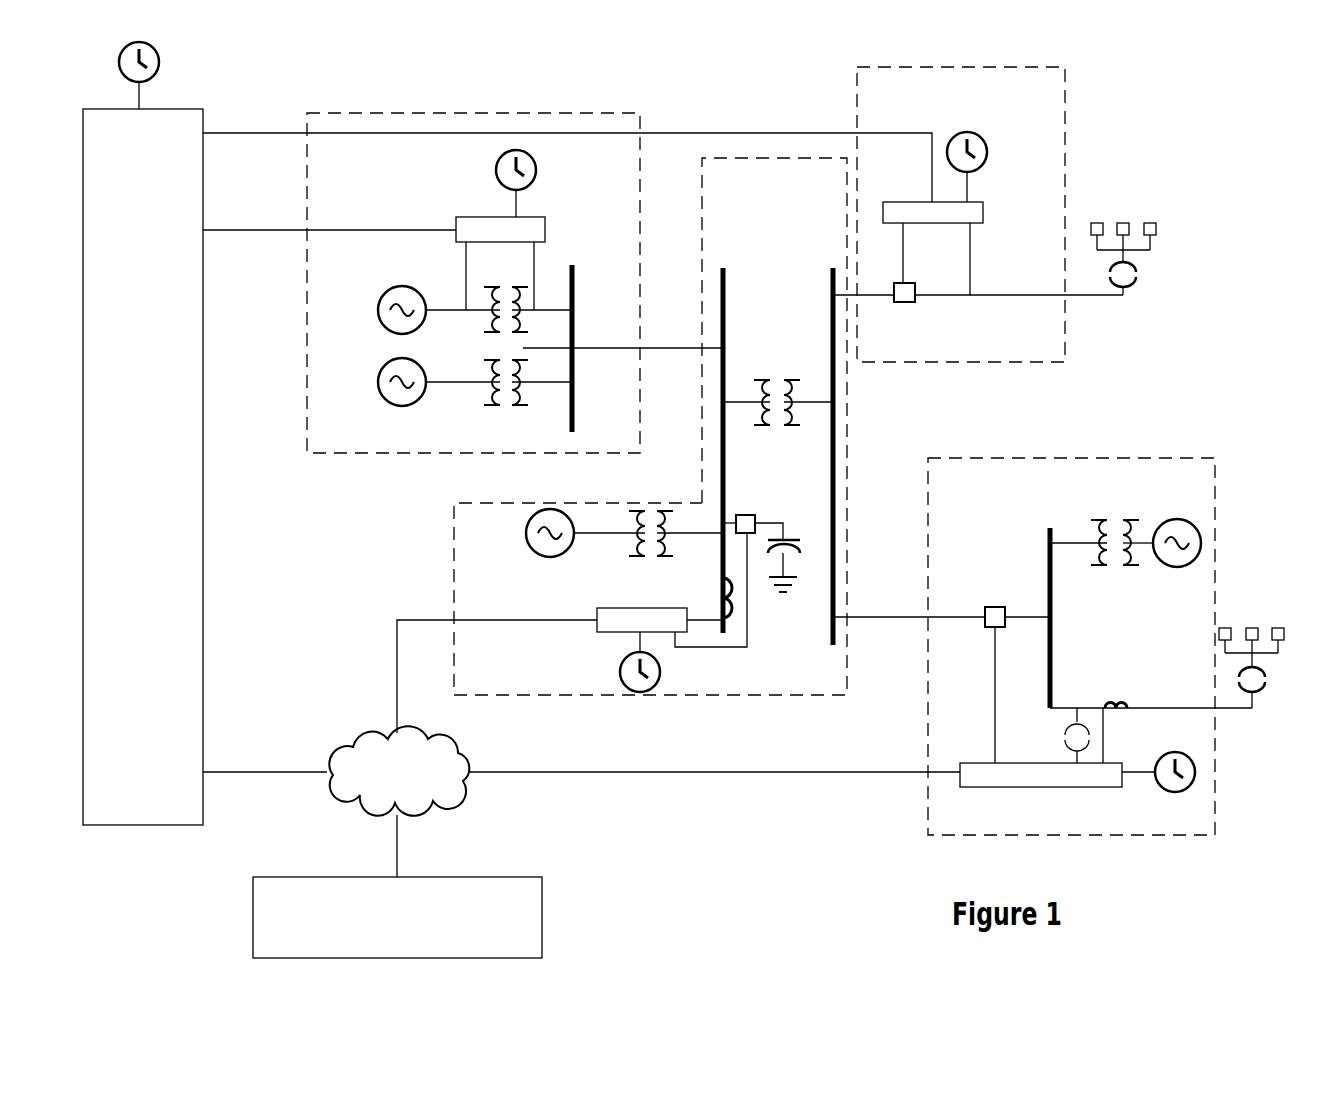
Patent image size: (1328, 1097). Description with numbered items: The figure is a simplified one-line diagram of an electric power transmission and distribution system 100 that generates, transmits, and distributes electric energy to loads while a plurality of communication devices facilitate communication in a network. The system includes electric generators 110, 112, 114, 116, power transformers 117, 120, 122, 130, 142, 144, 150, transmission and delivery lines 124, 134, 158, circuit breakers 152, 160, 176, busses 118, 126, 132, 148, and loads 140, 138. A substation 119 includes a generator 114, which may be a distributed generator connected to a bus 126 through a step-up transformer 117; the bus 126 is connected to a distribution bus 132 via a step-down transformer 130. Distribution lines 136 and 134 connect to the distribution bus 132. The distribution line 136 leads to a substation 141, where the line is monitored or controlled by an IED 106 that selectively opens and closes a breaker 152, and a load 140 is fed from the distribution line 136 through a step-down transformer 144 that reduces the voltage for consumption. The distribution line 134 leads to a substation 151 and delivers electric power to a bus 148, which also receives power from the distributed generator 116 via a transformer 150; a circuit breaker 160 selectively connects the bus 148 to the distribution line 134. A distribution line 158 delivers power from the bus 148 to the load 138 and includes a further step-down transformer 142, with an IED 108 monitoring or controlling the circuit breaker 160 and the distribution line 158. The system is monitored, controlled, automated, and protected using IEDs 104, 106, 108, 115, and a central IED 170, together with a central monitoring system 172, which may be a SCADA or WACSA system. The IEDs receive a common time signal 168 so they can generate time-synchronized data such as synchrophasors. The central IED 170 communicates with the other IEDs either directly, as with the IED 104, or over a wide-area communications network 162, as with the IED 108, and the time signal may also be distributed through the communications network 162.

The electric power transmission and distribution system 100 is at (1189, 133).
The intelligent electronic device 104 is at (466, 217).
The intelligent electronic device 106 is at (895, 202).
The intelligent electronic device 108 is at (1090, 787).
The generator 110 is at (377, 310).
The generator 112 is at (377, 382).
The generator 114 is at (526, 533).
The intelligent electronic device 115 is at (672, 608).
The distributed generator 116 is at (1168, 567).
The step-up transformer 117 is at (632, 548).
The bus 118 is at (575, 406).
The substation 119 is at (578, 695).
The transformer 120 is at (482, 333).
The transformer 122 is at (503, 406).
The line 124 is at (662, 350).
The bus 126 is at (726, 425).
The step-down transformer 130 is at (782, 380).
The distribution bus 132 is at (830, 602).
The distribution line 134 is at (936, 619).
The distribution line 136 is at (872, 298).
The load 138 is at (1252, 627).
The load 140 is at (1158, 228).
The substation 141 is at (1038, 362).
The step-down transformer 142 is at (1262, 690).
The step-down transformer 144 is at (1138, 275).
The bus 148 is at (1046, 532).
The transformer 150 is at (1118, 520).
The substation 151 is at (1143, 835).
The breaker 152 is at (910, 302).
The distribution line 158 is at (1143, 707).
The circuit breaker 160 is at (993, 607).
The communications network 162 is at (381, 799).
The common time signal 168 is at (160, 62).
The central IED 170 is at (127, 488).
The central monitoring system 172 is at (381, 944).
The breaker 176 is at (750, 515).